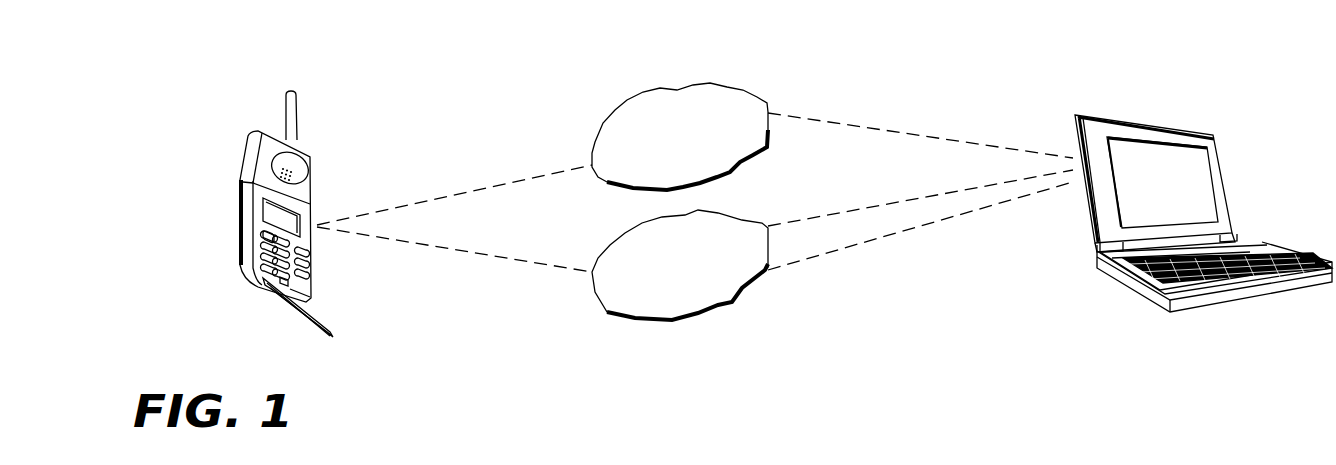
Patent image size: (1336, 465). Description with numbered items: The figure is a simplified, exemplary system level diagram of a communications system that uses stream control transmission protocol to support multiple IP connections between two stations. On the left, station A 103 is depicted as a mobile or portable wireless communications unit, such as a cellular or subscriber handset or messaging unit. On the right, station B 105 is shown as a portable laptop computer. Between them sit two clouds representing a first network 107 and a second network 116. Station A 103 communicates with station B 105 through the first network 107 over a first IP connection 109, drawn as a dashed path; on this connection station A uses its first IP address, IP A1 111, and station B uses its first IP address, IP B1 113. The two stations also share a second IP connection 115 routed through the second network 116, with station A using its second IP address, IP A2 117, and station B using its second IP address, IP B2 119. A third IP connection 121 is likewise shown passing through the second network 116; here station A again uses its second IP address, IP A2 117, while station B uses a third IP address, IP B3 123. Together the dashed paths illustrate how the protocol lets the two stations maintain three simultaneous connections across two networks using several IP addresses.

The station A 103 is at (250, 346).
The station B 105 is at (1137, 330).
The first network 107 is at (620, 112).
The second network 116 is at (607, 310).
The first IP connection 109 is at (500, 183).
The IP A1 111 is at (437, 173).
The IP A2 117 is at (458, 278).
The IP B1 113 is at (918, 112).
The second IP connection 115 is at (830, 213).
The IP B2 119 is at (873, 180).
The third IP connection 121 is at (833, 252).
The IP B3 123 is at (913, 255).